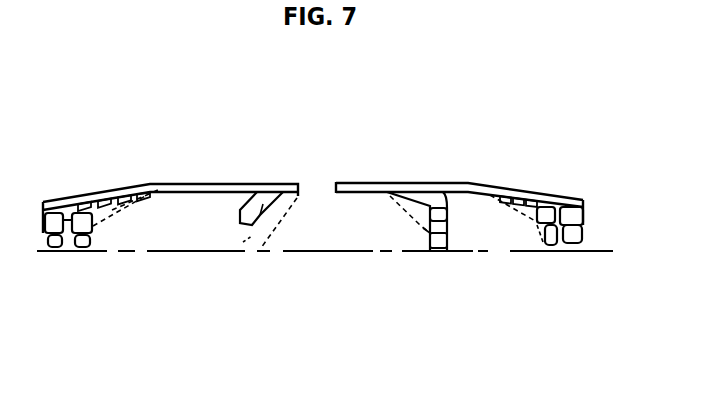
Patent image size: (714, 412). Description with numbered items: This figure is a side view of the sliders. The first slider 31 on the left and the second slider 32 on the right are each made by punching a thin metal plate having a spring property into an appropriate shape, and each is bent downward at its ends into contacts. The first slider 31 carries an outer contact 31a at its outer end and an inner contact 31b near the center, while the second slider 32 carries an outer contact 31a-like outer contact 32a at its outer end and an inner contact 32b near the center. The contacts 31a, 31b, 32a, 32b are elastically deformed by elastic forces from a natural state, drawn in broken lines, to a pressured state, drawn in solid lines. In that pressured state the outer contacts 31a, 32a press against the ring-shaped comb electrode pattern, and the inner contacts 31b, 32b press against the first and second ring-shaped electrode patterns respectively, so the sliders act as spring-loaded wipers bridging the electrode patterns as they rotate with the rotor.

The first slider 31 is at (162, 184).
The outer contact 31a is at (92, 251).
The inner contact 31b is at (248, 253).
The second slider 32 is at (462, 184).
The outer contact 32a is at (572, 252).
The inner contact 32b is at (438, 252).